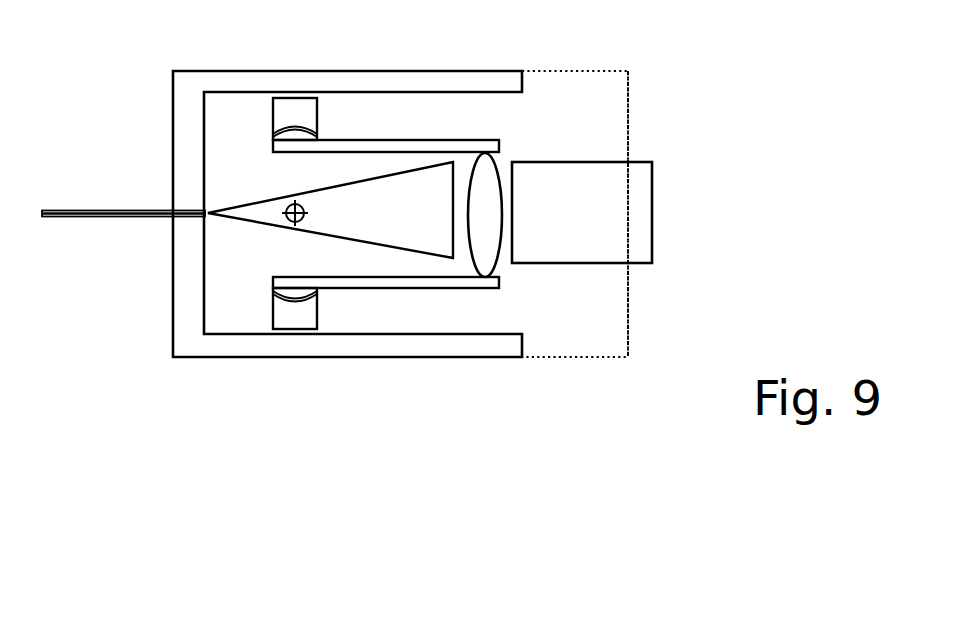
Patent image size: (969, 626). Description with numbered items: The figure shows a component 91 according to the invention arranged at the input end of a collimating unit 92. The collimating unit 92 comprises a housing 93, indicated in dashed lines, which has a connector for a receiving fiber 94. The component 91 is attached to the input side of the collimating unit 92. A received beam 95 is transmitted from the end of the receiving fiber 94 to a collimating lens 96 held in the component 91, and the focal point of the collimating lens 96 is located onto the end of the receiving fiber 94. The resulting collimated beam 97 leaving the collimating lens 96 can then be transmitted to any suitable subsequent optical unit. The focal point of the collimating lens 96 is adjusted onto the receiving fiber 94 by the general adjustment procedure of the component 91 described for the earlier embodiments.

The component 91 is at (246, 71).
The collimating unit 92 is at (600, 63).
The housing 93 is at (632, 100).
The receiving fiber 94 is at (127, 210).
The received beam 95 is at (407, 250).
The collimating lens 96 is at (492, 263).
The collimated beam 97 is at (612, 267).